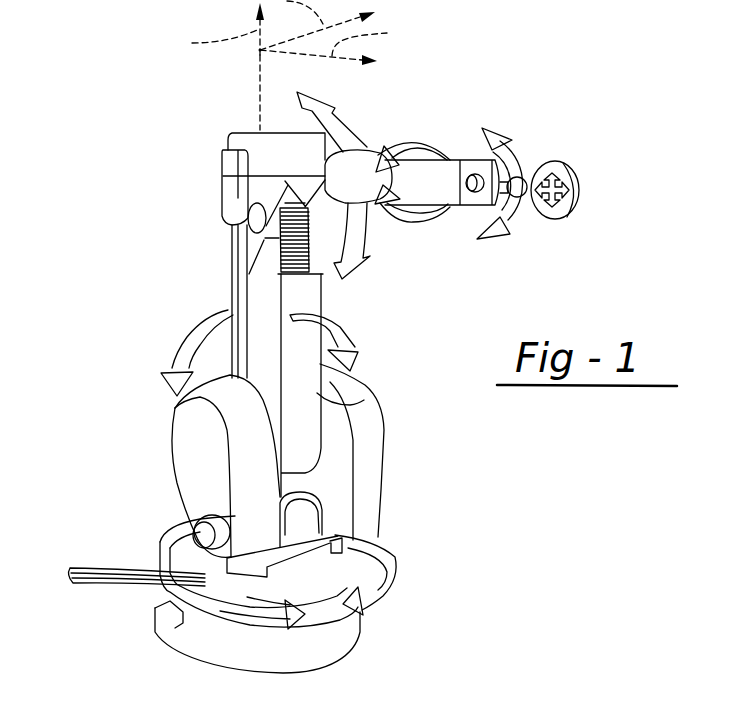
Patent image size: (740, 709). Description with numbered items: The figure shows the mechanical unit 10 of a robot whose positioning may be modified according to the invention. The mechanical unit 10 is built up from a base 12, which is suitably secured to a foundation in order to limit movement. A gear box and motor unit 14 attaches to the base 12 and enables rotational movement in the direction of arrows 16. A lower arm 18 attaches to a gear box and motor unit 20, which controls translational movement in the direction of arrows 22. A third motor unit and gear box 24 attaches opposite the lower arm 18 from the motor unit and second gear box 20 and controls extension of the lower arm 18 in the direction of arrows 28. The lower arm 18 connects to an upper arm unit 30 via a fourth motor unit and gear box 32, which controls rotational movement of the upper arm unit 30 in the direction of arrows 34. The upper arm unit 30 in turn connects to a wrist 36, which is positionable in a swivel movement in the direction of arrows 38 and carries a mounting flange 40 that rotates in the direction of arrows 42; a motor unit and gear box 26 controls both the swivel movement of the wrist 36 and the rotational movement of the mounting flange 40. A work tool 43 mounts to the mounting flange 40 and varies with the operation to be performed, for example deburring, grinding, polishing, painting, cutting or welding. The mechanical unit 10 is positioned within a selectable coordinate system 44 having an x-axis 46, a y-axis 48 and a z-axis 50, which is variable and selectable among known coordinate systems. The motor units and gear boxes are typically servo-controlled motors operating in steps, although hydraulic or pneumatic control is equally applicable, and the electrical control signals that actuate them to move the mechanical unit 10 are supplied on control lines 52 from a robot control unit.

The mechanical unit 10 is at (131, 227).
The base 12 is at (332, 648).
The gear box and motor unit 14 is at (247, 597).
The arrows 16 is at (400, 585).
The lower arm 18 is at (364, 400).
The gear box and motor unit 20 is at (197, 485).
The arrows 22 is at (173, 350).
The third motor unit and gear box 24 is at (372, 478).
The motor unit and gear box 26 is at (260, 297).
The arrows 28 is at (360, 247).
The upper arm unit 30 is at (368, 153).
The fourth motor unit and gear box 32 is at (253, 128).
The arrows 34 is at (413, 140).
The wrist 36 is at (469, 174).
The arrows 38 is at (503, 220).
The mounting flange 40 is at (533, 172).
The arrows 42 is at (579, 190).
The work tool 43 is at (569, 212).
The selectable coordinate system 44 is at (239, 56).
The x-axis 46 is at (376, 34).
The y-axis 48 is at (301, 12).
The z-axis 50 is at (207, 42).
The control lines 52 is at (104, 566).